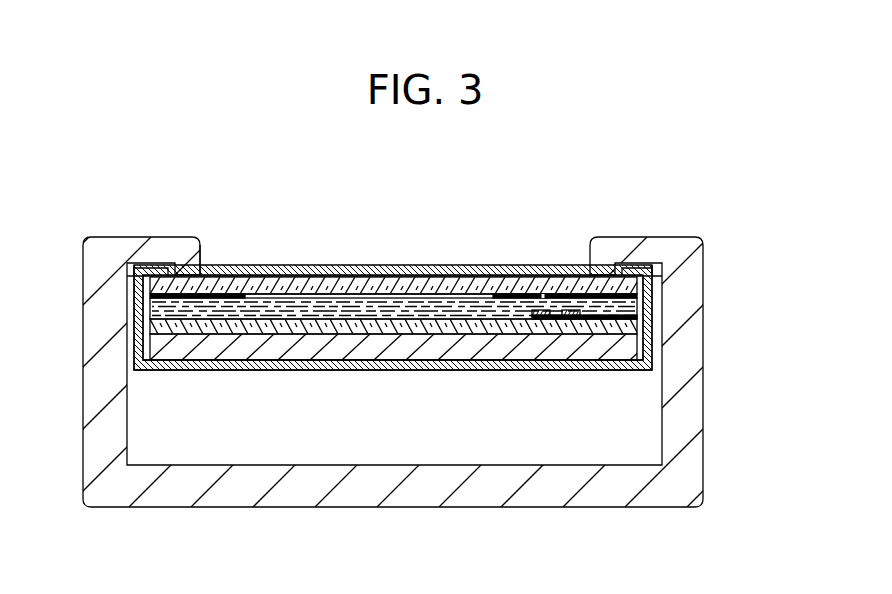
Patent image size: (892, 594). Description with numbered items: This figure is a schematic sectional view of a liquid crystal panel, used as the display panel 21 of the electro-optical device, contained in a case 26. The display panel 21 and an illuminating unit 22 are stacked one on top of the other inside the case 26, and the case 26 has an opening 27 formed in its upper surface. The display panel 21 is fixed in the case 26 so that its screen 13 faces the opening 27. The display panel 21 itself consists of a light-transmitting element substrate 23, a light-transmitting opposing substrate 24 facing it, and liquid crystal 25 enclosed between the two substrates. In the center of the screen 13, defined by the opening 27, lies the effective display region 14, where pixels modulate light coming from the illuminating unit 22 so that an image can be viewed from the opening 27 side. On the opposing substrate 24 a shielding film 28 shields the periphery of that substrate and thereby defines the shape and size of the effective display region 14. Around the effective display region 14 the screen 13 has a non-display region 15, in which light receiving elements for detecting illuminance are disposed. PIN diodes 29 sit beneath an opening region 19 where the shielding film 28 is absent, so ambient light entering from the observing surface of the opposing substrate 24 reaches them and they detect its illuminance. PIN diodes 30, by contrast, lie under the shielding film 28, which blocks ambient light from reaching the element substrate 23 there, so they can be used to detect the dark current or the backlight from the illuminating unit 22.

The screen 13 is at (391, 277).
The effective display region 14 is at (523, 179).
The non-display region 15 is at (532, 179).
The opening region 19 is at (543, 296).
The display panel 21 is at (480, 379).
The illuminating unit 22 is at (452, 351).
The element substrate 23 is at (633, 327).
The opposing substrate 24 is at (643, 277).
The liquid crystal 25 is at (647, 307).
The case 26 is at (658, 243).
The opening 27 is at (200, 253).
The shielding film 28 is at (243, 277).
The PIN diodes 29 is at (536, 318).
The PIN diodes 30 is at (569, 318).